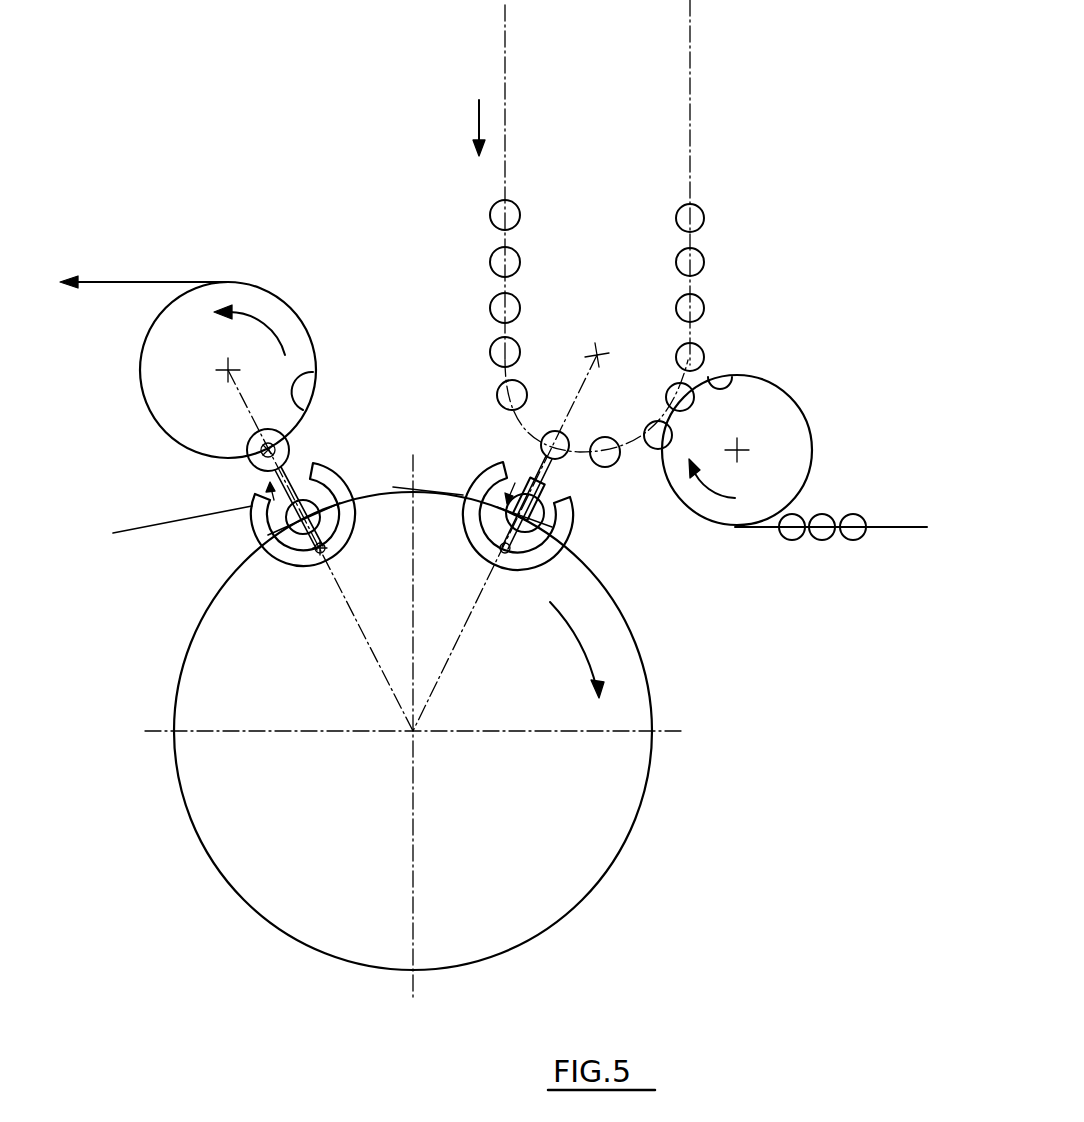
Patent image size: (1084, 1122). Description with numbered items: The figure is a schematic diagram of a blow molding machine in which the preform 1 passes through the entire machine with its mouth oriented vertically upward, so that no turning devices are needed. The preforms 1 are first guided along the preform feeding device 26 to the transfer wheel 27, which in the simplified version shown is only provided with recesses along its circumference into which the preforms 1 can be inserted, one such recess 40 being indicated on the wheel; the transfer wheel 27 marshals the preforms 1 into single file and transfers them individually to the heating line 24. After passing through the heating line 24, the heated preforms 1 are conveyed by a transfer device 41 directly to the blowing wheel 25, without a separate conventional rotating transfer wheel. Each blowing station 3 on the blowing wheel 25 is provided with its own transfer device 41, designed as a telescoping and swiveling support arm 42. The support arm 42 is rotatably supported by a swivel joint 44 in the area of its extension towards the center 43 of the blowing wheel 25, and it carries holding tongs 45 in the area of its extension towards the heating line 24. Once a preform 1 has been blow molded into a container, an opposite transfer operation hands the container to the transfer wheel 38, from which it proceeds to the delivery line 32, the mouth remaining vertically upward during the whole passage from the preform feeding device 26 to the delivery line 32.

The preform 1 is at (820, 513).
The blowing station 3 is at (332, 470).
The heating line 24 is at (690, 100).
The blowing wheel 25 is at (622, 797).
The preform feeding device 26 is at (893, 527).
The transfer wheel 27 is at (780, 403).
The delivery line 32 is at (132, 281).
The transfer wheel 38 is at (263, 303).
The recess 40 is at (720, 374).
The transfer device 41 is at (620, 566).
The support arm 42 is at (547, 463).
The center 43 is at (413, 731).
The swivel joint 44 is at (462, 496).
The holding tongs 45 is at (540, 448).